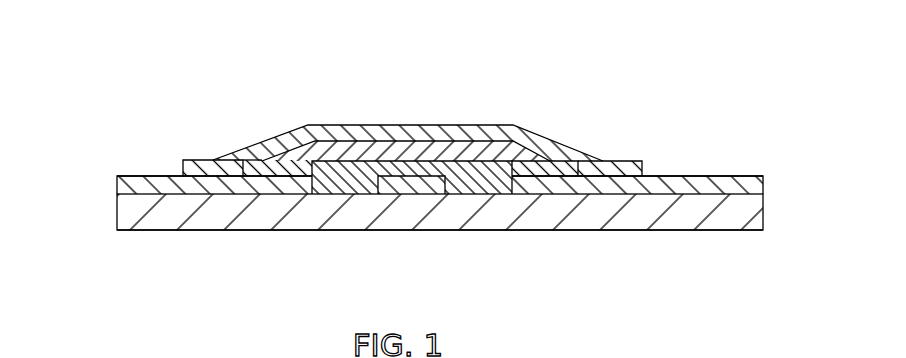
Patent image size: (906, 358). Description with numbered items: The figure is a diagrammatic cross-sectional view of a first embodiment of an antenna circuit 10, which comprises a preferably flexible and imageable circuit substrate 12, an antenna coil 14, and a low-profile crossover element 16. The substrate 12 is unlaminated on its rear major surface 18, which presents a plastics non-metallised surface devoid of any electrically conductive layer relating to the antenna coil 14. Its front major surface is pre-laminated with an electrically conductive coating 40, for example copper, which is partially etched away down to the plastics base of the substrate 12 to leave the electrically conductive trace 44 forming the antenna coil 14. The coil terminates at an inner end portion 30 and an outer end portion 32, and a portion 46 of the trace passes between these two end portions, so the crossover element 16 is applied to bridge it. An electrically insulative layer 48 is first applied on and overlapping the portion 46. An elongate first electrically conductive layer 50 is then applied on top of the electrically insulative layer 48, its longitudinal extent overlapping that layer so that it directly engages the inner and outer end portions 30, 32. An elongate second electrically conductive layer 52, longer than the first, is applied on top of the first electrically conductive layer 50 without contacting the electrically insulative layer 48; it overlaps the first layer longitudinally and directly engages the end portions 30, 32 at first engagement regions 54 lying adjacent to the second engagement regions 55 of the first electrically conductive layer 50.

The antenna circuit 10 is at (558, 95).
The circuit substrate 12 is at (718, 218).
The antenna coil 14 is at (672, 177).
The crossover element 16 is at (498, 113).
The rear major surface 18 is at (493, 233).
The inner end portion 30 is at (525, 177).
The outer end portion 32 is at (293, 177).
The electrically conductive coating 40 is at (133, 175).
The electrically conductive trace 44 is at (168, 175).
The portion of the antenna coil 46 is at (425, 158).
The electrically insulative layer 48 is at (347, 180).
The first electrically conductive layer 50 is at (262, 160).
The second electrically conductive layer 52 is at (461, 135).
The first engagement regions 54 is at (208, 177).
The second engagement regions 55 is at (270, 177).